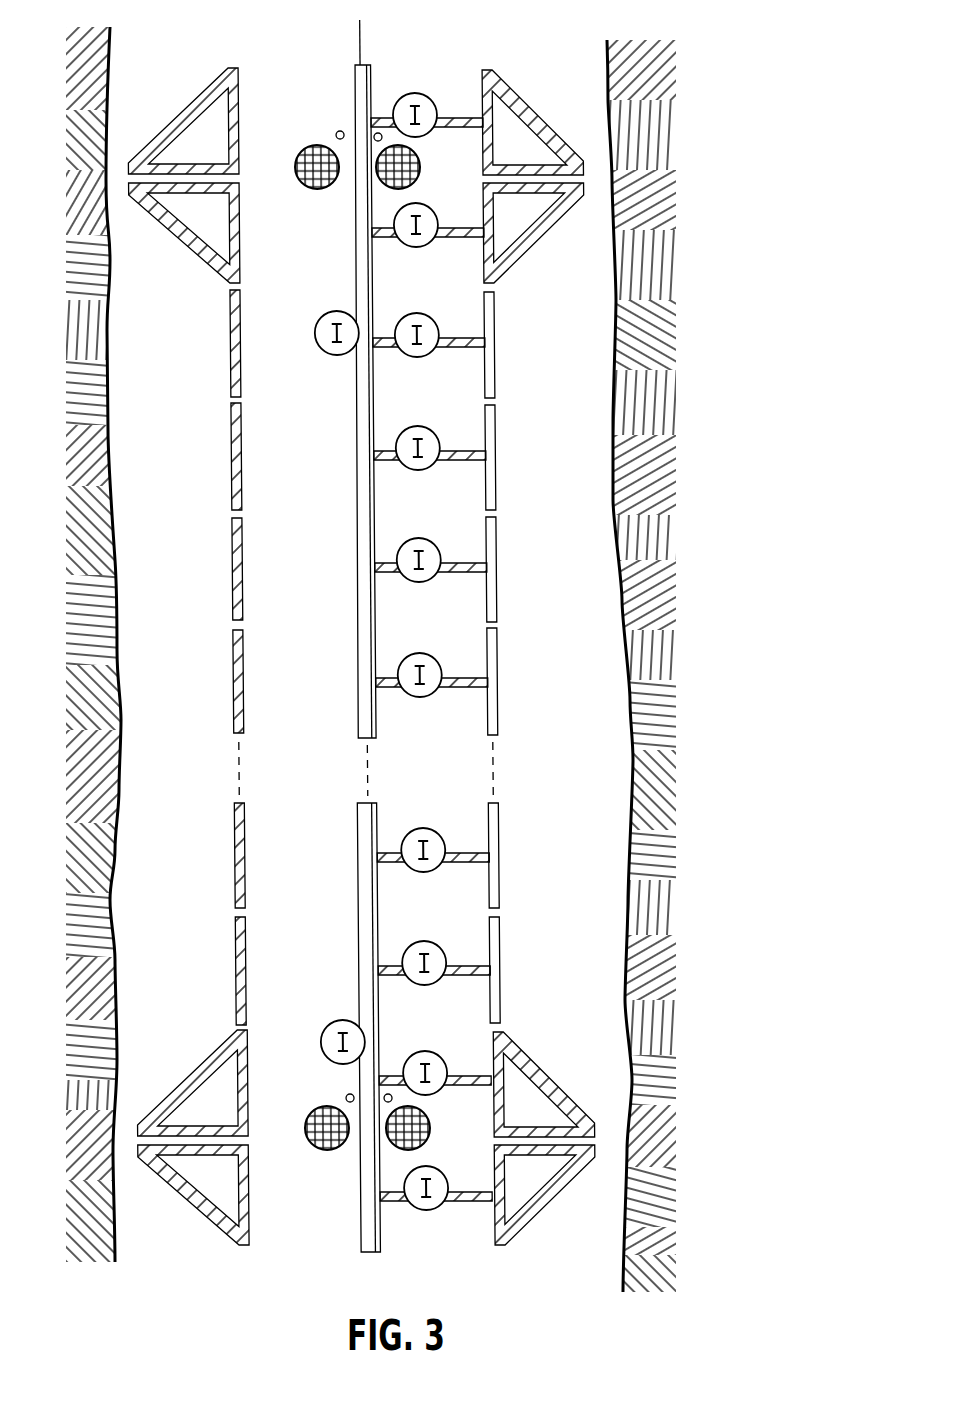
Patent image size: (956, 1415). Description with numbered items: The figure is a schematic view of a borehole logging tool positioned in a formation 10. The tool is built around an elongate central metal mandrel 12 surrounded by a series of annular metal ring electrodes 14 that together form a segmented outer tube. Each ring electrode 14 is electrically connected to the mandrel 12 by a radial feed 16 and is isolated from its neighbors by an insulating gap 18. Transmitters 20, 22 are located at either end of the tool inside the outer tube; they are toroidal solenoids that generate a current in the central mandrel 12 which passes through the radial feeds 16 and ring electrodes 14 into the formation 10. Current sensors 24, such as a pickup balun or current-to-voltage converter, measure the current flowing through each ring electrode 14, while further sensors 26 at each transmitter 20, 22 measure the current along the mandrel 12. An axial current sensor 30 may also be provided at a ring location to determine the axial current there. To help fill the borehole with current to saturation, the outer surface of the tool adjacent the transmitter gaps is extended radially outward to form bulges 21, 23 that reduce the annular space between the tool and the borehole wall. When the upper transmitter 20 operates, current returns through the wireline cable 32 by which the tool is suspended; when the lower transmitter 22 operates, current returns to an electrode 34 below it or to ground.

The formation 10 is at (656, 628).
The central metal mandrel 12 is at (352, 458).
The annular metal ring electrode 14 is at (481, 92).
The radial feed 16 is at (455, 350).
The insulating gap 18 is at (222, 1025).
The upper transmitter 20 is at (300, 148).
The bulge 21 is at (551, 133).
The lower transmitter 22 is at (312, 1150).
The bulge 23 is at (191, 1205).
The current sensor 24 is at (436, 318).
The further sensor 26 is at (336, 131).
The axial current sensor 30 is at (321, 351).
The wireline cable 32 is at (361, 54).
The electrode 34 is at (489, 1247).